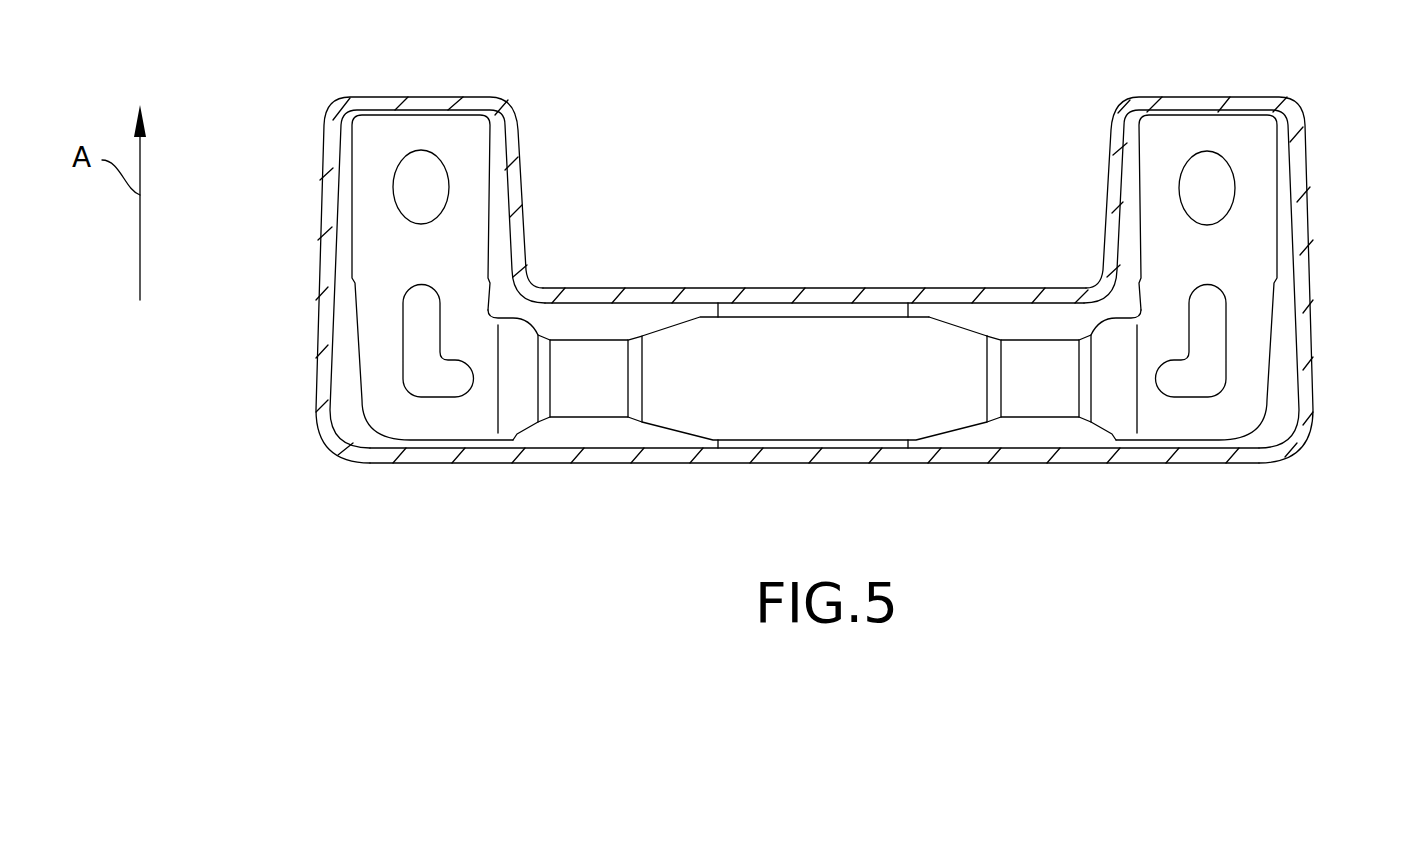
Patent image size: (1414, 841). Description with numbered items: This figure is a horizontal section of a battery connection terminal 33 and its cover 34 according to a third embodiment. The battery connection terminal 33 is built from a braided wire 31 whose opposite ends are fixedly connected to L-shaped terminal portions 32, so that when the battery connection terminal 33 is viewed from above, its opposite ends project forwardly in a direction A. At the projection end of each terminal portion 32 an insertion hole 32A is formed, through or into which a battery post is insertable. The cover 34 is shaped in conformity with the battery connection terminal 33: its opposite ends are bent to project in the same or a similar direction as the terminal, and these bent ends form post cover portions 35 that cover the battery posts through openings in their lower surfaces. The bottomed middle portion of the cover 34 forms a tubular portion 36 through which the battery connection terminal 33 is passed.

The braided wire 31 is at (697, 340).
The L-shaped terminal portion 32 is at (375, 253).
The insertion hole 32A is at (396, 195).
The battery connection terminal 33 is at (962, 307).
The cover 34 is at (820, 260).
The post cover portion 35 is at (527, 193).
The tubular portion 36 is at (825, 463).